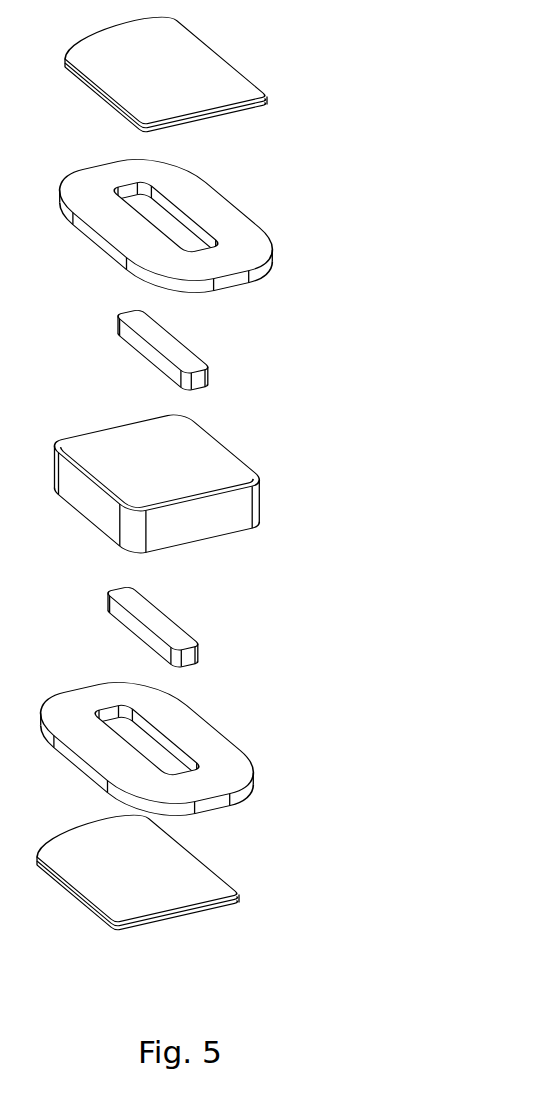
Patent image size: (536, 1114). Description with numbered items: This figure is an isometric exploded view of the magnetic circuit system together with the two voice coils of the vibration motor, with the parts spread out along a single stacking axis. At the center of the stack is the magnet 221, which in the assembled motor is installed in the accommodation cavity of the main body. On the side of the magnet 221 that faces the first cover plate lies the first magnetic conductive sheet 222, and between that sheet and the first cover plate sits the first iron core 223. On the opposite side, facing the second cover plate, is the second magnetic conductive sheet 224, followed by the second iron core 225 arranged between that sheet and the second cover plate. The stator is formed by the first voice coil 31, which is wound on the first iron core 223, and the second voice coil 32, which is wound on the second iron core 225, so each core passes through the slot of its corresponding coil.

The first magnetic conductive sheet 222 is at (225, 80).
The first voice coil 31 is at (245, 230).
The first iron core 223 is at (193, 367).
The magnet 221 is at (230, 462).
The second iron core 225 is at (178, 640).
The second voice coil 32 is at (218, 755).
The second magnetic conductive sheet 224 is at (210, 885).